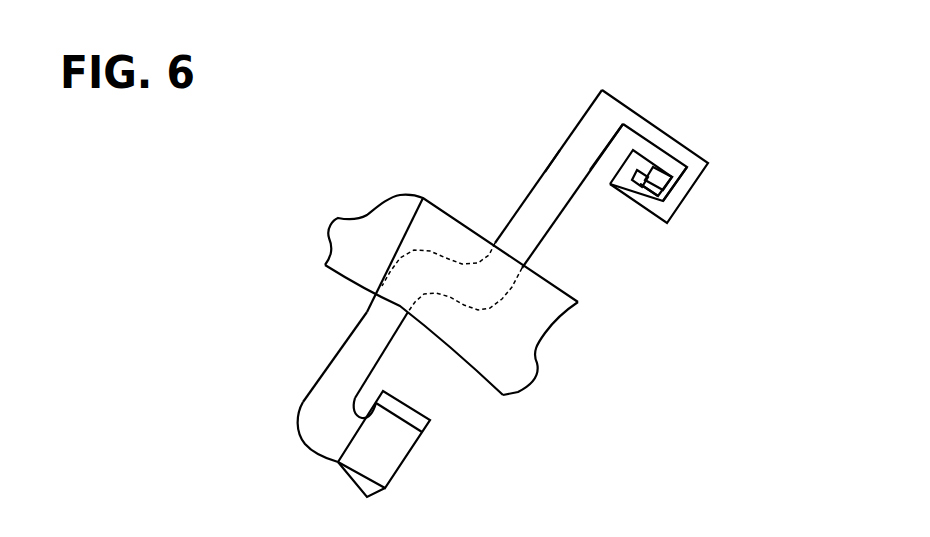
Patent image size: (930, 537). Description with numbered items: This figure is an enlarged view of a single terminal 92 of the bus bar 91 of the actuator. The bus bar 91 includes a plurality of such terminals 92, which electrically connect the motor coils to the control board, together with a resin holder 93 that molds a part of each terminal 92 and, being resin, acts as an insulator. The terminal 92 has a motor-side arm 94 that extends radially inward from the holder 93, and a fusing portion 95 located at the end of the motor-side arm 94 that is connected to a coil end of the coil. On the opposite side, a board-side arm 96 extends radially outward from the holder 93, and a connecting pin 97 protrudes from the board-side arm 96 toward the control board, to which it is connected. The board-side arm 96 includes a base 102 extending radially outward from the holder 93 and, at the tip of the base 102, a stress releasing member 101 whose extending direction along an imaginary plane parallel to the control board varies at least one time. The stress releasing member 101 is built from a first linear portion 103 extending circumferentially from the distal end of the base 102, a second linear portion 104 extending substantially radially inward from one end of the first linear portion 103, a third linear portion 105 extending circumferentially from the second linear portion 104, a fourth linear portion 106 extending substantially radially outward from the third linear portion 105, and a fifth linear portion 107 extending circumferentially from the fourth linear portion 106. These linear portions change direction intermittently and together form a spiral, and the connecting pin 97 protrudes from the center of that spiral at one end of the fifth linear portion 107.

The bus bar 91 is at (368, 212).
The terminal 92 is at (309, 388).
The holder 93 is at (520, 338).
The motor-side arm 94 is at (357, 347).
The fusing portion 95 is at (387, 448).
The board-side arm 96 is at (551, 158).
The connecting pin 97 is at (660, 173).
The stress releasing member 101 is at (708, 146).
The base 102 is at (528, 217).
The first linear portion 103 is at (650, 137).
The second linear portion 104 is at (685, 190).
The third linear portion 105 is at (648, 202).
The fourth linear portion 106 is at (628, 168).
The fifth linear portion 107 is at (642, 177).